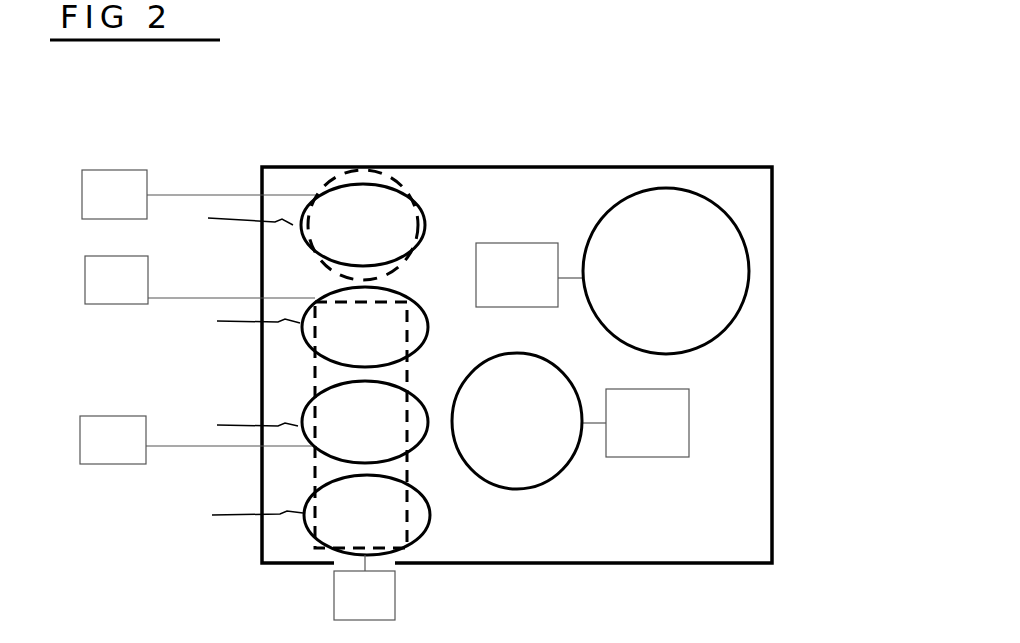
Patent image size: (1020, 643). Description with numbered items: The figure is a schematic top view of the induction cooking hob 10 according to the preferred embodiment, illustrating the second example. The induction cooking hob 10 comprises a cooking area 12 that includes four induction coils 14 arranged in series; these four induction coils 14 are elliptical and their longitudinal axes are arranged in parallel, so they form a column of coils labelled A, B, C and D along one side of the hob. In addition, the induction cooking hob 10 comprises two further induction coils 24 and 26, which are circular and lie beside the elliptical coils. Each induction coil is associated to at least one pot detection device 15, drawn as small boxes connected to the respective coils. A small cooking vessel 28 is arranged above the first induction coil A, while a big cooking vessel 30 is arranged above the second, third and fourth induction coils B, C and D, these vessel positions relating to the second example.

The induction cooking hob 10 is at (752, 463).
The cooking area 12 is at (358, 150).
The induction coils 14 is at (410, 322).
The pot detection device 15 is at (384, 395).
The further induction coil 24 is at (670, 207).
The further induction coil 26 is at (557, 462).
The small cooking vessel 28 is at (320, 187).
The big cooking vessel 30 is at (313, 383).